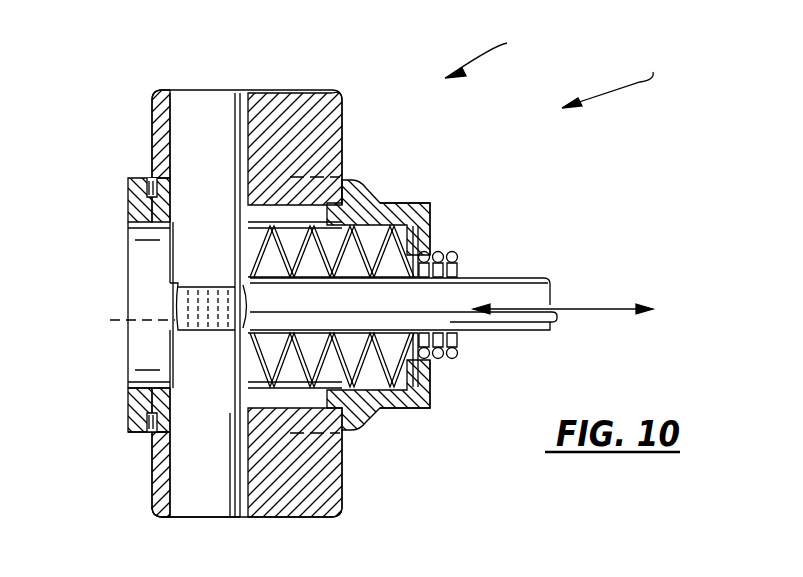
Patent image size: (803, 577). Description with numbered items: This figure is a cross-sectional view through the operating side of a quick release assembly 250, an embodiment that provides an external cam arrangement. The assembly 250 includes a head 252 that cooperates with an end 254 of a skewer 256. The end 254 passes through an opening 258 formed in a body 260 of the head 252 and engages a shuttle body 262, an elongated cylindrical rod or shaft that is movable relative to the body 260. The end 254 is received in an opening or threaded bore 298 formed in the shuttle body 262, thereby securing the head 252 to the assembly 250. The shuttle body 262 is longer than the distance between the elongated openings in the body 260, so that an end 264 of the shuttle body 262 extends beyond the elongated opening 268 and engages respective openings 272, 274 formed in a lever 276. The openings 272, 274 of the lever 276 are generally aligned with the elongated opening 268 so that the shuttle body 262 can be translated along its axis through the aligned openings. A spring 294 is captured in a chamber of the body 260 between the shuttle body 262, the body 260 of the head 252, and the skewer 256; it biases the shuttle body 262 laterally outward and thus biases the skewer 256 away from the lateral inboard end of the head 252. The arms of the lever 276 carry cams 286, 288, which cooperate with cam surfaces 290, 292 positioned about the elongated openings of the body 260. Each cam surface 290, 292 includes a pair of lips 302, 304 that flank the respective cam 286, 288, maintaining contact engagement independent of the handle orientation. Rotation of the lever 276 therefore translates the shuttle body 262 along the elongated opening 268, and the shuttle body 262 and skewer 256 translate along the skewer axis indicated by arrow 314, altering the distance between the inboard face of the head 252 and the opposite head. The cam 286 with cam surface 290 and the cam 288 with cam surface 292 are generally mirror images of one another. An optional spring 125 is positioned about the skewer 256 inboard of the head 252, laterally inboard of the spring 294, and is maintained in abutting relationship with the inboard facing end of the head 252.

The quick release assembly 250 is at (607, 79).
The head 252 is at (495, 47).
The end of skewer 254 is at (175, 288).
The skewer 256 is at (528, 280).
The opening 258 is at (460, 338).
The body 260 is at (372, 182).
The shuttle body 262 is at (212, 90).
The end of shuttle body 264 is at (237, 90).
The elongated opening 268 is at (342, 133).
The opening 272 is at (186, 90).
The opening 274 is at (180, 507).
The lever 276 is at (333, 90).
The cam 286 is at (130, 180).
The cam 288 is at (133, 432).
The cam surface 290 is at (130, 200).
The cam surface 292 is at (153, 420).
The spring 294 is at (407, 200).
The threaded bore 298 is at (110, 322).
The lip 302 is at (147, 187).
The lip 304 is at (153, 433).
The arrow 314 is at (587, 308).
The spring 125 is at (458, 250).